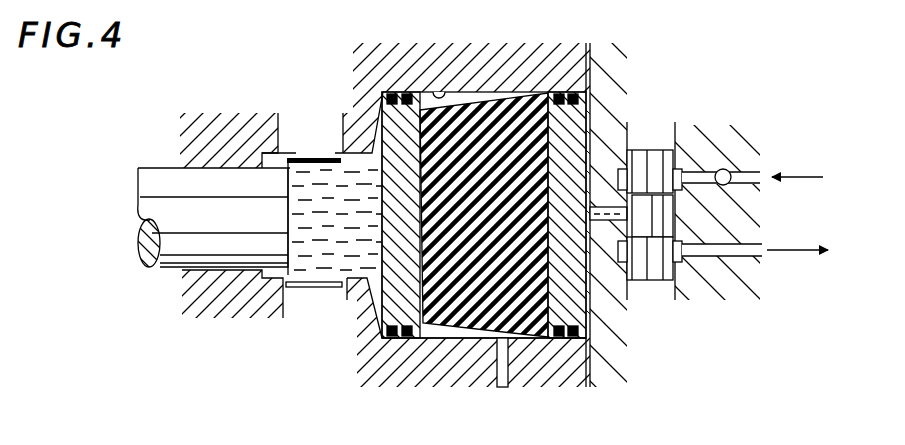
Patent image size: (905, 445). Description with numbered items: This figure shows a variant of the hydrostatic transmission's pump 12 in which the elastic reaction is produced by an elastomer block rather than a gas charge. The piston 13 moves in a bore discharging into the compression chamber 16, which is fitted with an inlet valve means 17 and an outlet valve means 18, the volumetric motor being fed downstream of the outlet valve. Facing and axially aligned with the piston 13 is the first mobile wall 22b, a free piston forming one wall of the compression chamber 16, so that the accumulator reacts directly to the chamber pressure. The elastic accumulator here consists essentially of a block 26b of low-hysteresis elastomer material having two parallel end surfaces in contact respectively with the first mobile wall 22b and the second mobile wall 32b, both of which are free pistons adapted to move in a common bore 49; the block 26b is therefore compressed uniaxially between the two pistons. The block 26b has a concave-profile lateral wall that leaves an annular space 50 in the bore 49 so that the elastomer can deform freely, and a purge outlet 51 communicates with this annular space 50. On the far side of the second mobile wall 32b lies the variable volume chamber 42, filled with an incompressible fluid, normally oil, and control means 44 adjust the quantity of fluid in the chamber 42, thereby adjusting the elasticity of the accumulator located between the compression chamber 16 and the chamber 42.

The pump 12 is at (200, 108).
The piston 13 is at (160, 180).
The compression chamber 16 is at (305, 186).
The inlet valve means 17 is at (320, 158).
The outlet valve means 18 is at (310, 290).
The first mobile wall 22b is at (375, 125).
The block of elastomer material 26b is at (500, 100).
The second mobile wall 32b is at (600, 105).
The variable volume chamber 42 is at (600, 312).
The control means 44 is at (658, 292).
The common bore 49 is at (447, 92).
The annular space 50 is at (446, 340).
The purge outlet 51 is at (502, 345).